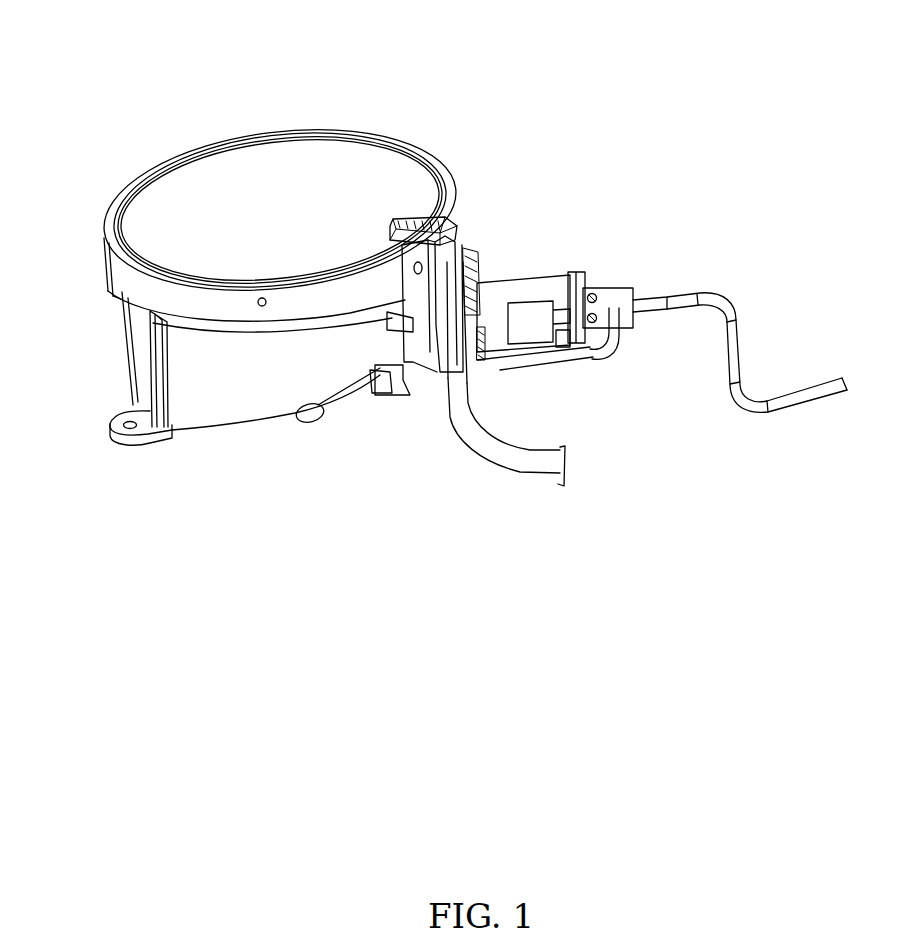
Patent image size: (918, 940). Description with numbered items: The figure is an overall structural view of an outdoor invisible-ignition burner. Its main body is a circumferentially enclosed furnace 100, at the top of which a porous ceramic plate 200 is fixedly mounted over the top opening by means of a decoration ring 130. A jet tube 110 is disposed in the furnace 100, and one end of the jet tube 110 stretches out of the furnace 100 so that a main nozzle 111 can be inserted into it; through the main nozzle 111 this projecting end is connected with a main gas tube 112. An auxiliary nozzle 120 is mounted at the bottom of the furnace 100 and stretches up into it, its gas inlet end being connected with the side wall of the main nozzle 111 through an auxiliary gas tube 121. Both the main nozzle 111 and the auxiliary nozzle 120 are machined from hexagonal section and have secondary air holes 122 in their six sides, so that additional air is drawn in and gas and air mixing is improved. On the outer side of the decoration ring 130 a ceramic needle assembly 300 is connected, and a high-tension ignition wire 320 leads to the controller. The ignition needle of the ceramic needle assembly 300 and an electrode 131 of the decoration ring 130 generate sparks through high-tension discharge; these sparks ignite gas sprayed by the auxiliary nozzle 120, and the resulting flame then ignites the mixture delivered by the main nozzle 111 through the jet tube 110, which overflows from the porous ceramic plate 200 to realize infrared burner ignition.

The furnace 100 is at (183, 373).
The jet tube 110 is at (502, 340).
The main nozzle 111 is at (617, 293).
The main gas tube 112 is at (725, 300).
The auxiliary nozzle 120 is at (400, 385).
The auxiliary gas tube 121 is at (532, 358).
The secondary air holes 122 is at (597, 288).
The decoration ring 130 is at (463, 218).
The electrode 131 is at (392, 238).
The porous ceramic plate 200 is at (287, 207).
The ceramic needle assembly 300 is at (452, 264).
The high-tension ignition wire 320 is at (500, 457).